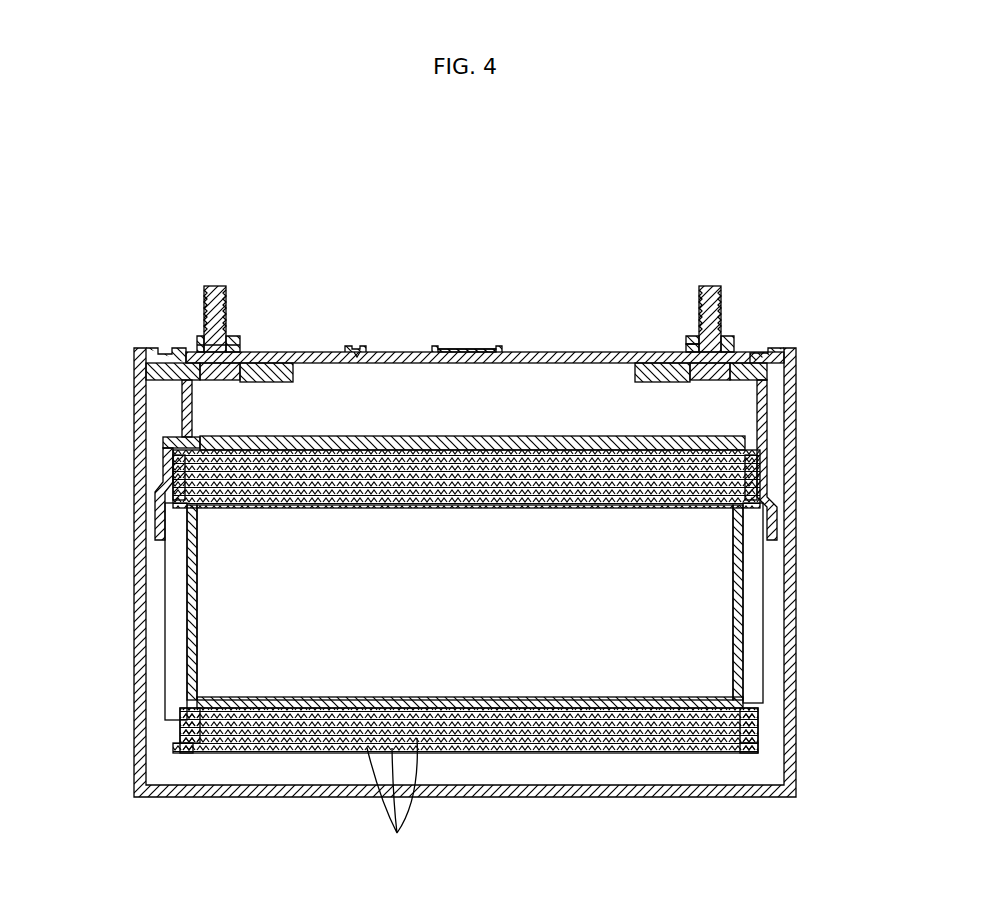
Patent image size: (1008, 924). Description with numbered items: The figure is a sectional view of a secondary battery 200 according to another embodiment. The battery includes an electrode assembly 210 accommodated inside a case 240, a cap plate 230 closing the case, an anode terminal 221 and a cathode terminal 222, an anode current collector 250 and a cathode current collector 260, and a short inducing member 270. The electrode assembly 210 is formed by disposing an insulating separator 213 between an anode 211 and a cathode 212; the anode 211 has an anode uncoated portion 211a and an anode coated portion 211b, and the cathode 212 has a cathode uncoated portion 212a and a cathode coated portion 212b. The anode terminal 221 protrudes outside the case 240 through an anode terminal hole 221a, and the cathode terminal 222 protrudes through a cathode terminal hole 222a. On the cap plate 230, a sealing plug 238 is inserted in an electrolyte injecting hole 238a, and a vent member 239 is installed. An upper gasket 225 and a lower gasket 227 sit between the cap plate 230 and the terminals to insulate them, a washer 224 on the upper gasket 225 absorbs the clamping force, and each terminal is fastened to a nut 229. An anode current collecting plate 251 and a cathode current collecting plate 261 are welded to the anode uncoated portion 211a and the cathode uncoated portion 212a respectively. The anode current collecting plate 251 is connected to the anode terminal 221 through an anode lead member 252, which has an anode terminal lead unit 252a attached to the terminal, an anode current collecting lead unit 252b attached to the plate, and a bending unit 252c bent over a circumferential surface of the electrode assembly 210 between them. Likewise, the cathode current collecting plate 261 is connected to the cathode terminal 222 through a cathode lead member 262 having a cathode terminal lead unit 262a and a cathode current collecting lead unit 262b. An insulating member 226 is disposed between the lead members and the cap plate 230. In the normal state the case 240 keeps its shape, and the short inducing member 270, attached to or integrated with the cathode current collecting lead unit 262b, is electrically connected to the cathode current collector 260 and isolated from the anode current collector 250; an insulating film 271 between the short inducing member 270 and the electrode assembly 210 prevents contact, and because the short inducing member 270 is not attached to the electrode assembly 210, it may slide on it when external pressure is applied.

The secondary battery 200 is at (487, 195).
The electrode assembly 210 is at (469, 603).
The anode 211 is at (211, 806).
The anode uncoated portion 211a is at (176, 753).
The anode coated portion 211b is at (246, 748).
The cathode 212 is at (727, 806).
The cathode uncoated portion 212a is at (748, 753).
The cathode coated portion 212b is at (692, 753).
The insulating separator 213 is at (392, 802).
The anode terminal 221 is at (220, 286).
The anode terminal hole 221a is at (237, 342).
The cathode terminal 222 is at (710, 286).
The cathode terminal hole 222a is at (698, 345).
The washer 224 is at (692, 340).
The upper gasket 225 is at (730, 348).
The insulating member 226 is at (287, 353).
The lower gasket 227 is at (692, 350).
The nut 229 is at (203, 333).
The cap plate 230 is at (422, 352).
The sealing plug 238 is at (352, 350).
The electrolyte injecting hole 238a is at (372, 352).
The vent member 239 is at (465, 349).
The case 240 is at (790, 680).
The anode current collector 250 is at (109, 540).
The anode current collecting plate 251 is at (56, 520).
The anode lead member 252 is at (132, 450).
The anode terminal lead unit 252a is at (208, 377).
The anode current collecting lead unit 252b is at (180, 464).
The bending unit 252c is at (175, 440).
The cathode current collector 260 is at (825, 533).
The cathode current collecting plate 261 is at (870, 520).
The cathode lead member 262 is at (801, 451).
The cathode terminal lead unit 262a is at (742, 375).
The cathode current collecting lead unit 262b is at (758, 467).
The short inducing member 270 is at (571, 450).
The insulating film 271 is at (527, 438).